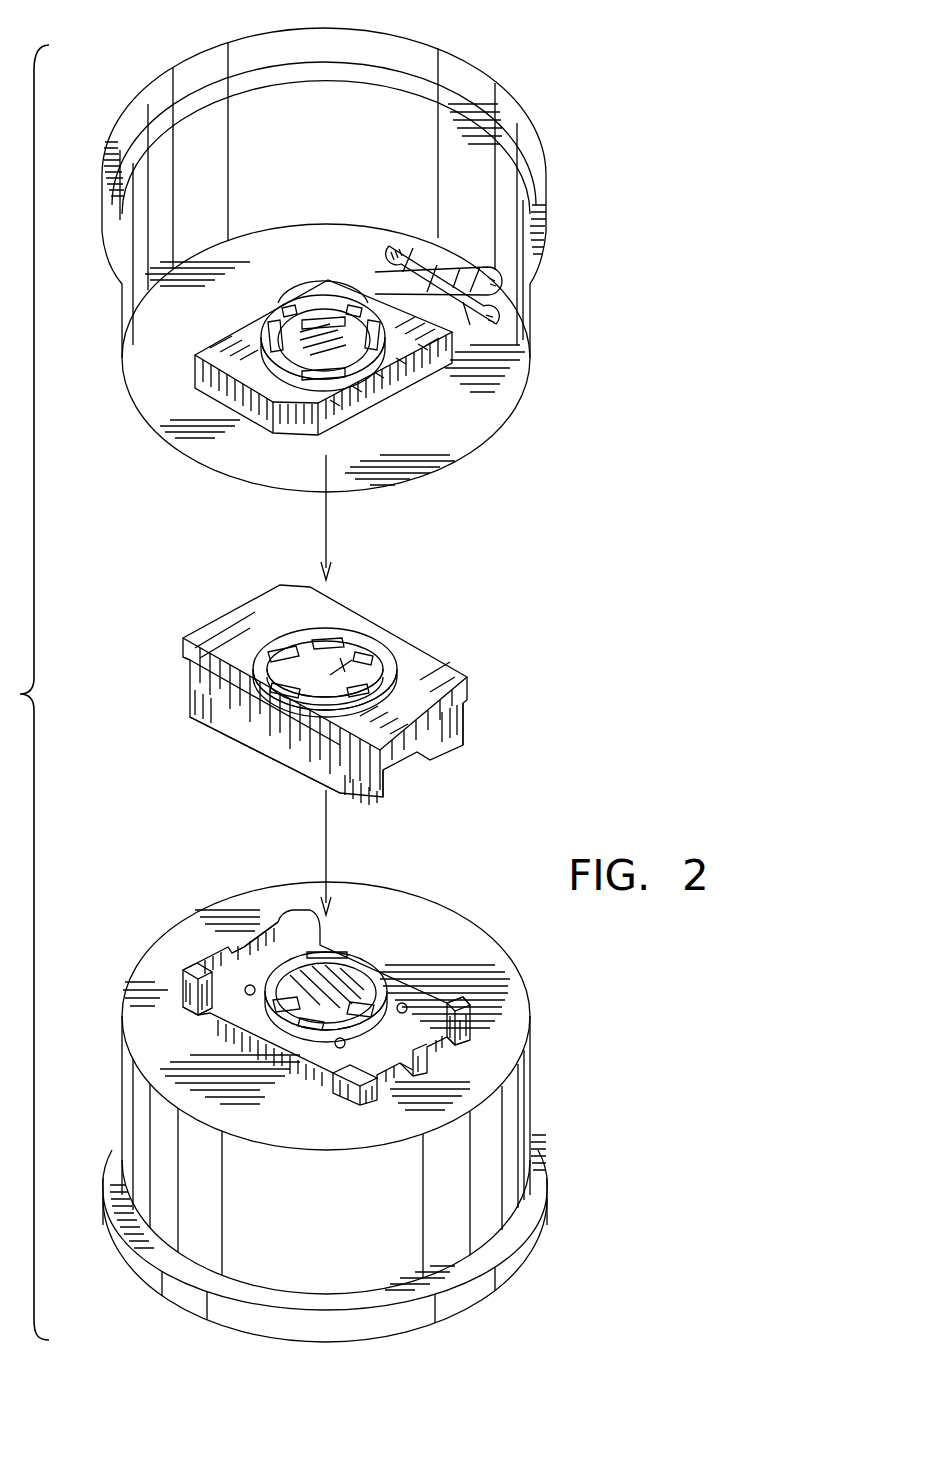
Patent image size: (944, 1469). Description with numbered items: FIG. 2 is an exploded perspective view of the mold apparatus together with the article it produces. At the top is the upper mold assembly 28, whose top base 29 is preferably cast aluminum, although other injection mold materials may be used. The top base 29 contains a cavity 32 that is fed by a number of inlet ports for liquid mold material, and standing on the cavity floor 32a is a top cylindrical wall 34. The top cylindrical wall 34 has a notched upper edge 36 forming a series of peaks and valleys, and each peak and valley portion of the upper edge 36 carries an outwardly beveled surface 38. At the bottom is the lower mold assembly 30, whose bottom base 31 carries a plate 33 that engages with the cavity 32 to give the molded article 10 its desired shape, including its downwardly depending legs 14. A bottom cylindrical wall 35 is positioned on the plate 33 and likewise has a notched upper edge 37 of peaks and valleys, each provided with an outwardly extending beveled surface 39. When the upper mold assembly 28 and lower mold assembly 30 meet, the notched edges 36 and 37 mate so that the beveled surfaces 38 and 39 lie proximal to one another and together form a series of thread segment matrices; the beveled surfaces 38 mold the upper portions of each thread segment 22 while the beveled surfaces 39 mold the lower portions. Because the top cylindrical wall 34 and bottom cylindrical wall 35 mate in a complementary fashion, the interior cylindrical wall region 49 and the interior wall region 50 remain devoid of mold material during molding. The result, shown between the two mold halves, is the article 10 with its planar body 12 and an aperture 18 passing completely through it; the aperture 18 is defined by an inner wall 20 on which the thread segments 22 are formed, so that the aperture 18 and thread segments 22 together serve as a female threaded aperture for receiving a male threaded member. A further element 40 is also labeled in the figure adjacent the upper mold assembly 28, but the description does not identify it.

The molded article 10 is at (382, 693).
The planar body 12 is at (427, 677).
The downwardly depending legs 14 is at (270, 740).
The aperture 18 is at (330, 673).
The inner wall 20 is at (327, 640).
The thread segments 22 is at (323, 647).
The upper mold assembly 28 is at (568, 342).
The top base 29 is at (443, 153).
The lower mold assembly 30 is at (570, 1045).
The bottom base 31 is at (453, 1205).
The cavity 32 is at (243, 410).
The cavity floor 32a is at (242, 358).
The plate 33 is at (293, 932).
The top cylindrical wall 34 is at (332, 308).
The bottom cylindrical wall 35 is at (340, 953).
The notched upper edge 36 is at (380, 380).
The notched upper edge 37 is at (347, 960).
The outwardly beveled surface 38 is at (303, 283).
The outwardly extending beveled surface 39 is at (455, 1040).
The latch arm 40 is at (503, 298).
The interior cylindrical wall region 49 is at (300, 348).
The interior wall region 50 is at (293, 930).